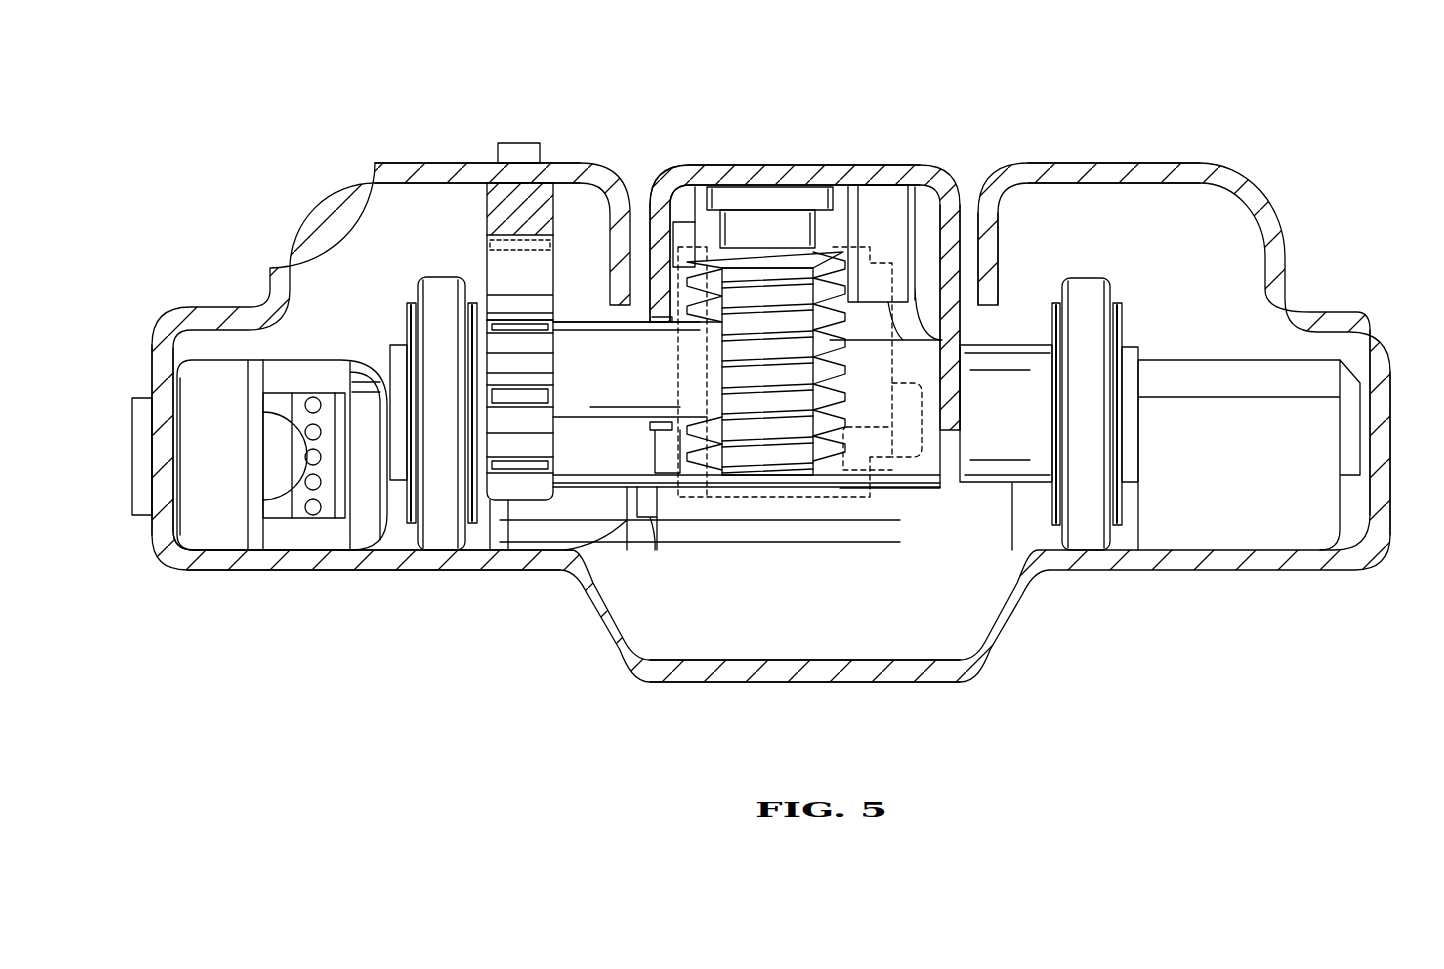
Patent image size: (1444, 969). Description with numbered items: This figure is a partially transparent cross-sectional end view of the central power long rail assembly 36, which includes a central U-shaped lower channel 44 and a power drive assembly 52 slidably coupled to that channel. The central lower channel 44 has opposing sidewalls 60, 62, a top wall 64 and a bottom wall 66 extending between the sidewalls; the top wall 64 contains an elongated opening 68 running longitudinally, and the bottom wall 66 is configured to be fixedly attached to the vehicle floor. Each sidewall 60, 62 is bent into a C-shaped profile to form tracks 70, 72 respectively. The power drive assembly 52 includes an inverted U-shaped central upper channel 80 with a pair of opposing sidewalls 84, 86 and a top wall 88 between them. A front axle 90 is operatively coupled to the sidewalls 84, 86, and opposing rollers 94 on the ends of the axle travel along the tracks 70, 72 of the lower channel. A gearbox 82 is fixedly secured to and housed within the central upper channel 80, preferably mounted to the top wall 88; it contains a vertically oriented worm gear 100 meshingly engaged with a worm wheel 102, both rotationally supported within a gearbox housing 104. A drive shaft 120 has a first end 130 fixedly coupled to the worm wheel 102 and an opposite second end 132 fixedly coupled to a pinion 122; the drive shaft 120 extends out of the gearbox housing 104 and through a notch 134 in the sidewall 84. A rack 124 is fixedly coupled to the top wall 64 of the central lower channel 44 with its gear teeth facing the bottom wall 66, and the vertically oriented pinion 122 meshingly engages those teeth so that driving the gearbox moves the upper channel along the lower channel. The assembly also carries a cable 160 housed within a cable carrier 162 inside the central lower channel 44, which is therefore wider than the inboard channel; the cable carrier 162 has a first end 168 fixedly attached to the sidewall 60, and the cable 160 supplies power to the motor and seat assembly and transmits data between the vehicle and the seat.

The central power long rail assembly 36 is at (290, 155).
The central lower channel 44 is at (931, 709).
The power drive assembly 52 is at (810, 133).
The sidewall 60 is at (152, 372).
The sidewall 62 is at (1386, 373).
The top wall 64 is at (428, 163).
The bottom wall 66 is at (816, 683).
The elongated opening 68 is at (973, 197).
The track 70 is at (383, 550).
The track 72 is at (1237, 533).
The central upper channel 80 is at (765, 166).
The gearbox 82 is at (848, 523).
The sidewall 84 is at (652, 237).
The sidewall 86 is at (952, 225).
The top wall 88 is at (703, 165).
The front axle 90 is at (989, 485).
The rollers 94 is at (441, 283).
The worm gear 100 is at (827, 247).
The worm wheel 102 is at (783, 478).
The gearbox housing 104 is at (837, 505).
The drive shaft 120 is at (603, 495).
The pinion 122 is at (522, 507).
The rack 124 is at (560, 232).
The first end 130 is at (714, 425).
The second end 132 is at (553, 320).
The notch 134 is at (663, 318).
The cable 160 is at (130, 497).
The cable carrier 162 is at (331, 360).
The first end 168 is at (175, 545).